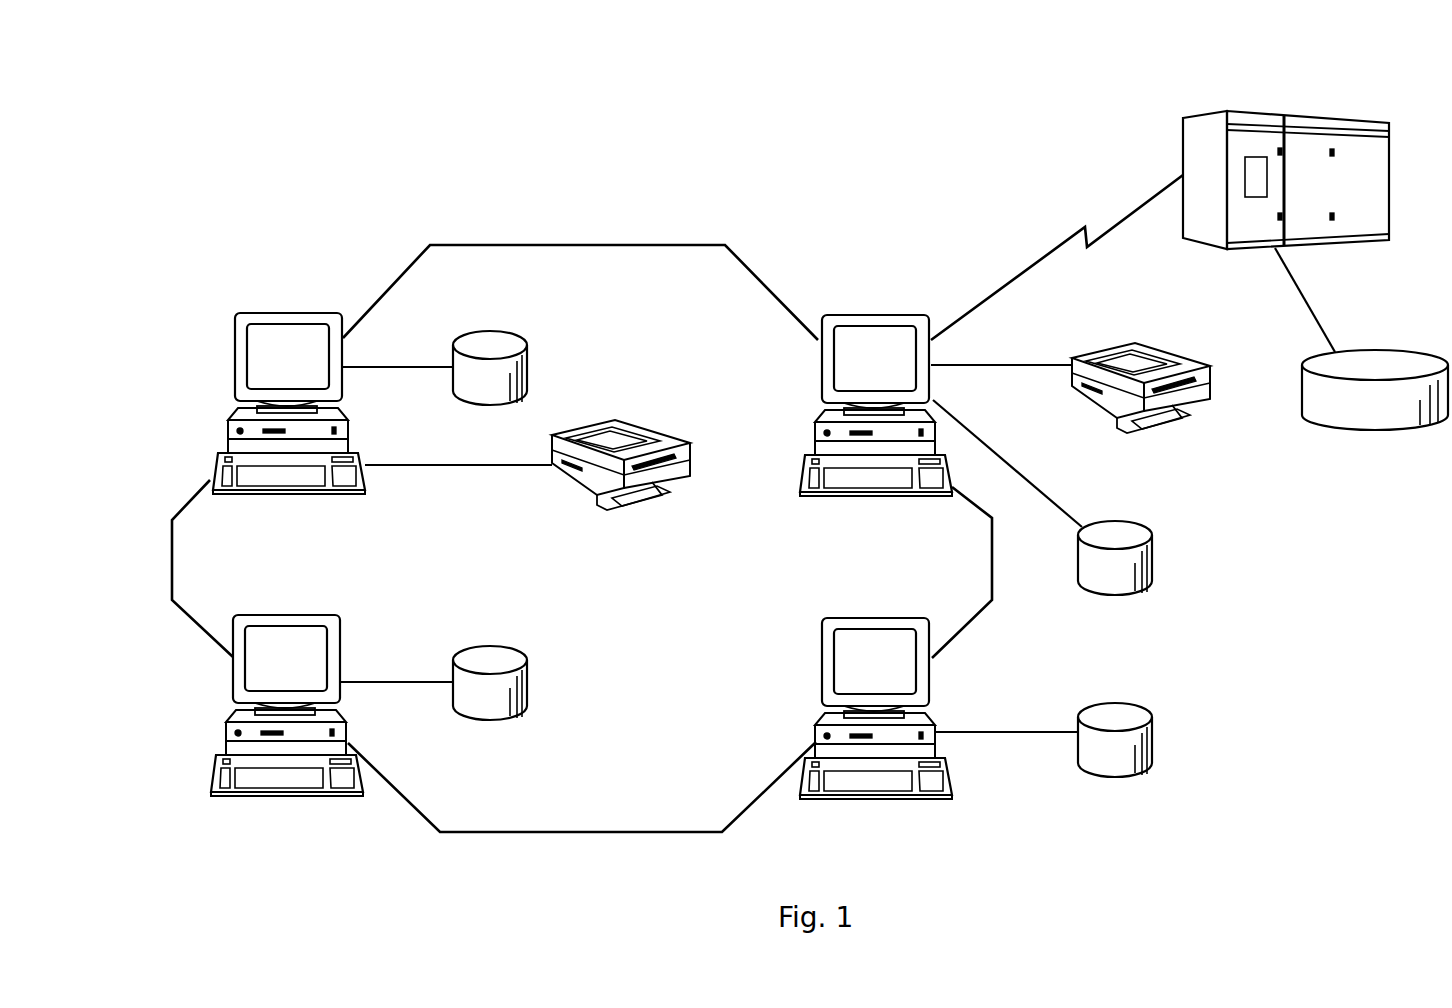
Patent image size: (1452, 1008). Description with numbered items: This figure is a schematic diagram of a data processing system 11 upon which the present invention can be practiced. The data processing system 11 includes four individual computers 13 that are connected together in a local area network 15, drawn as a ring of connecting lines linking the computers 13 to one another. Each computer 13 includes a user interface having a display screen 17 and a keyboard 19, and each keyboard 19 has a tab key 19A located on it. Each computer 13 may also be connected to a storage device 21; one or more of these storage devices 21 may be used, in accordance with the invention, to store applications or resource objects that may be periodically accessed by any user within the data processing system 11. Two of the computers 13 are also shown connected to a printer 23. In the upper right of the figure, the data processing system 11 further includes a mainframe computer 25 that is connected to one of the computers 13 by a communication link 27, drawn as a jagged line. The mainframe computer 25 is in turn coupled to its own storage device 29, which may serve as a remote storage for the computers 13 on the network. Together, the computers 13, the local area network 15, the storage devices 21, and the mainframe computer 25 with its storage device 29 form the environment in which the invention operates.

The data processing system 11 is at (568, 180).
The computer 13 is at (297, 313).
The local area network 15 is at (535, 832).
The display screen 17 is at (262, 352).
The keyboard 19 is at (318, 492).
The tab key 19A is at (218, 460).
The storage device 21 is at (510, 331).
The printer 23 is at (635, 420).
The mainframe computer 25 is at (1190, 113).
The communication link 27 is at (1112, 225).
The storage device 29 is at (1325, 430).